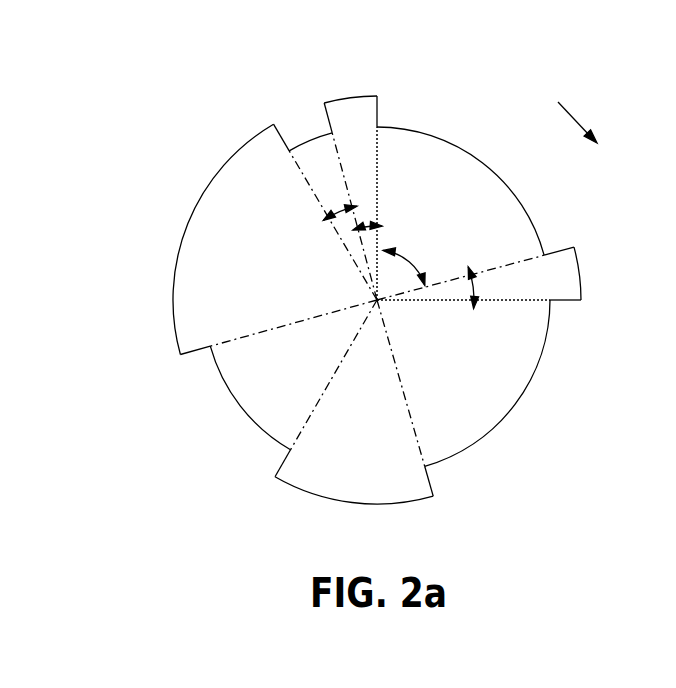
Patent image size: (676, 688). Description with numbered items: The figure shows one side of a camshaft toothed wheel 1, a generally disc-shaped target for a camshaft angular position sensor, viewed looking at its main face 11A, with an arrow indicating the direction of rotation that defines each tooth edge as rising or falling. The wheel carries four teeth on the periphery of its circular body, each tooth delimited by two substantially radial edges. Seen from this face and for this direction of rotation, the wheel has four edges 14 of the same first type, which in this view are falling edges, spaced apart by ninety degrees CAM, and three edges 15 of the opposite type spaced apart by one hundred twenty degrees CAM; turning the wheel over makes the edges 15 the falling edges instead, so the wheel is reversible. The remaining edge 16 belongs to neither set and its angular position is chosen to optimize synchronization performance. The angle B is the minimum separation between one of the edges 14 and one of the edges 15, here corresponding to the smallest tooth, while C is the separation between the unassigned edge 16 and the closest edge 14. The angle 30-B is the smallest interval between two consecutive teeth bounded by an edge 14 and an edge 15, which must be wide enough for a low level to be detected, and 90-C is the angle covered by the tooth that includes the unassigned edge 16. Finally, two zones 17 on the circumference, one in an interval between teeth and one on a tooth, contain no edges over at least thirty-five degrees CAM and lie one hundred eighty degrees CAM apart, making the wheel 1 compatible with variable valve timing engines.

The camshaft toothed wheel 1 is at (530, 437).
The main face 11A is at (253, 236).
The edges of the first type 14 is at (327, 130).
The edges of the second type 15 is at (285, 128).
The remaining edge 16 is at (378, 113).
The zones devoid of tooth edges 17 is at (541, 362).
The minimum angular separation B is at (482, 288).
The minimum angular separation of unassigned edge C is at (404, 262).
The angular interval between consecutive teeth 30-B is at (322, 220).
The angle covered by tooth with unassigned edge 90-C is at (383, 226).